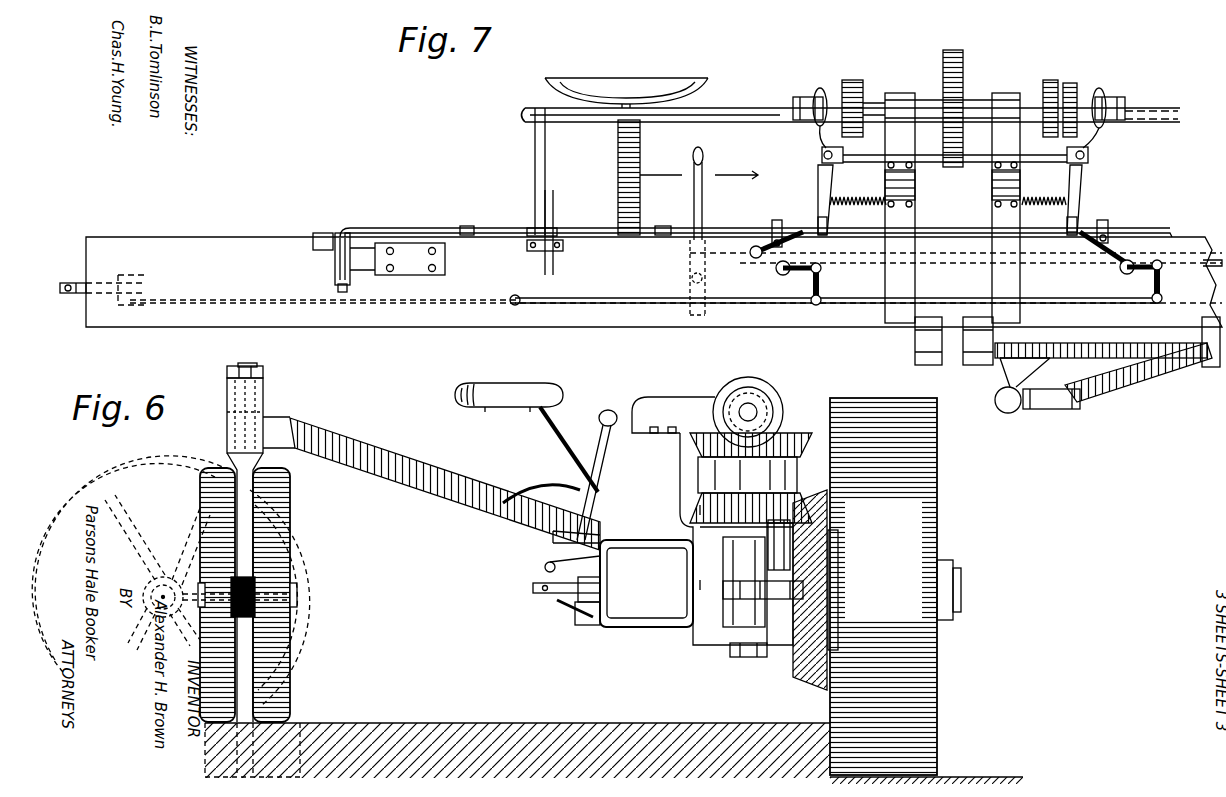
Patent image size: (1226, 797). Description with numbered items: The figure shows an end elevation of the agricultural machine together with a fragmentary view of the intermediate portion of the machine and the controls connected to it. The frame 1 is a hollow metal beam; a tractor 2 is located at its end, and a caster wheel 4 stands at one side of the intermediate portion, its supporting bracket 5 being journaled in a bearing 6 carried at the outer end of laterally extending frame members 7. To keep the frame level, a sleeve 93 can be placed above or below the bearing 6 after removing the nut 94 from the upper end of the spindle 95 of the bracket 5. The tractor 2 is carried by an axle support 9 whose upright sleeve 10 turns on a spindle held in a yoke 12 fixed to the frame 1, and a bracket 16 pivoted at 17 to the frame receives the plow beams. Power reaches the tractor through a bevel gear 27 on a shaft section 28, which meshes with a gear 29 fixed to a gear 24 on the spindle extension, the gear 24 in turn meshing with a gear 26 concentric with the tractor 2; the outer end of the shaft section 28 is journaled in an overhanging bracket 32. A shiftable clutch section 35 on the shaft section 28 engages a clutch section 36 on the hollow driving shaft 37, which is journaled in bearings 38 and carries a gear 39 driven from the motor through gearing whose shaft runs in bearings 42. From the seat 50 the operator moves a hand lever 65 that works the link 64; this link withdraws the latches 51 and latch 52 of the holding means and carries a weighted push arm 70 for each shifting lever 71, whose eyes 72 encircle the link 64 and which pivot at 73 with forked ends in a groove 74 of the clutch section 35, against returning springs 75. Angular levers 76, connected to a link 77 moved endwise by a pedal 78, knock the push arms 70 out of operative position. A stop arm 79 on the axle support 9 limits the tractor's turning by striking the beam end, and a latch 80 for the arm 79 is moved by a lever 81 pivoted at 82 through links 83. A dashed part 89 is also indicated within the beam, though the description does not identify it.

In FIG. 7, the frame 1 is at (654, 282).
In FIG. 6, the frame 1 is at (635, 628).
In FIG. 6, the tractor 2 is at (895, 586).
In FIG. 6, the caster wheel 4 is at (228, 615).
In FIG. 6, the supporting bracket 5 is at (228, 462).
In FIG. 6, the bearing 6 is at (270, 418).
In FIG. 6, the frame members 7 is at (418, 464).
In FIG. 6, the axle support 9 is at (768, 650).
In FIG. 6, the upright sleeve 10 is at (775, 560).
In FIG. 6, the yoke 12 is at (680, 530).
In FIG. 7, the bracket 16 is at (1102, 384).
In FIG. 7, the pivot 17 is at (935, 366).
In FIG. 6, the gear 24 is at (800, 505).
In FIG. 6, the gear 26 is at (795, 668).
In FIG. 6, the bevel gear 27 is at (750, 380).
In FIG. 7, the shaft section 28 is at (745, 106).
In FIG. 6, the shaft section 28 is at (752, 410).
In FIG. 6, the gear 29 is at (790, 438).
In FIG. 6, the overhanging bracket 32 is at (686, 399).
In FIG. 7, the clutch section 35 is at (805, 97).
In FIG. 7, the clutch section 36 is at (860, 85).
In FIG. 7, the driving shaft 37 is at (875, 100).
In FIG. 7, the bearings 38 is at (903, 93).
In FIG. 7, the gear 39 is at (955, 50).
In FIG. 7, the bearings 42 is at (992, 188).
In FIG. 7, the seat 50 is at (624, 76).
In FIG. 6, the seat 50 is at (492, 383).
In FIG. 7, the latches 51 is at (330, 250).
In FIG. 7, the latch 52 is at (349, 288).
In FIG. 7, the link 64 is at (410, 226).
In FIG. 7, the hand lever 65 is at (535, 143).
In FIG. 6, the hand lever 65 is at (608, 410).
In FIG. 7, the push arm 70 is at (795, 238).
In FIG. 7, the shifting lever 71 is at (830, 190).
In FIG. 7, the eye 72 is at (828, 235).
In FIG. 7, the pivot 73 is at (822, 155).
In FIG. 7, the groove 74 is at (822, 88).
In FIG. 7, the returning spring 75 is at (856, 206).
In FIG. 7, the angular lever 76 is at (796, 276).
In FIG. 7, the link 77 is at (750, 303).
In FIG. 7, the pedal 78 is at (553, 212).
In FIG. 6, the stop arm 79 is at (725, 590).
In FIG. 7, the latch 80 is at (70, 282).
In FIG. 6, the latch 80 is at (533, 589).
In FIG. 7, the lever 81 is at (703, 200).
In FIG. 6, the lever 81 is at (606, 480).
In FIG. 7, the pivot 82 is at (688, 277).
In FIG. 7, the links 83 is at (1215, 255).
In FIG. 6, the links 83 is at (575, 606).
In FIG. 7, the rod 89 is at (240, 306).
In FIG. 6, the sleeve 93 is at (227, 395).
In FIG. 6, the nut 94 is at (234, 366).
In FIG. 6, the spindle 95 is at (247, 363).